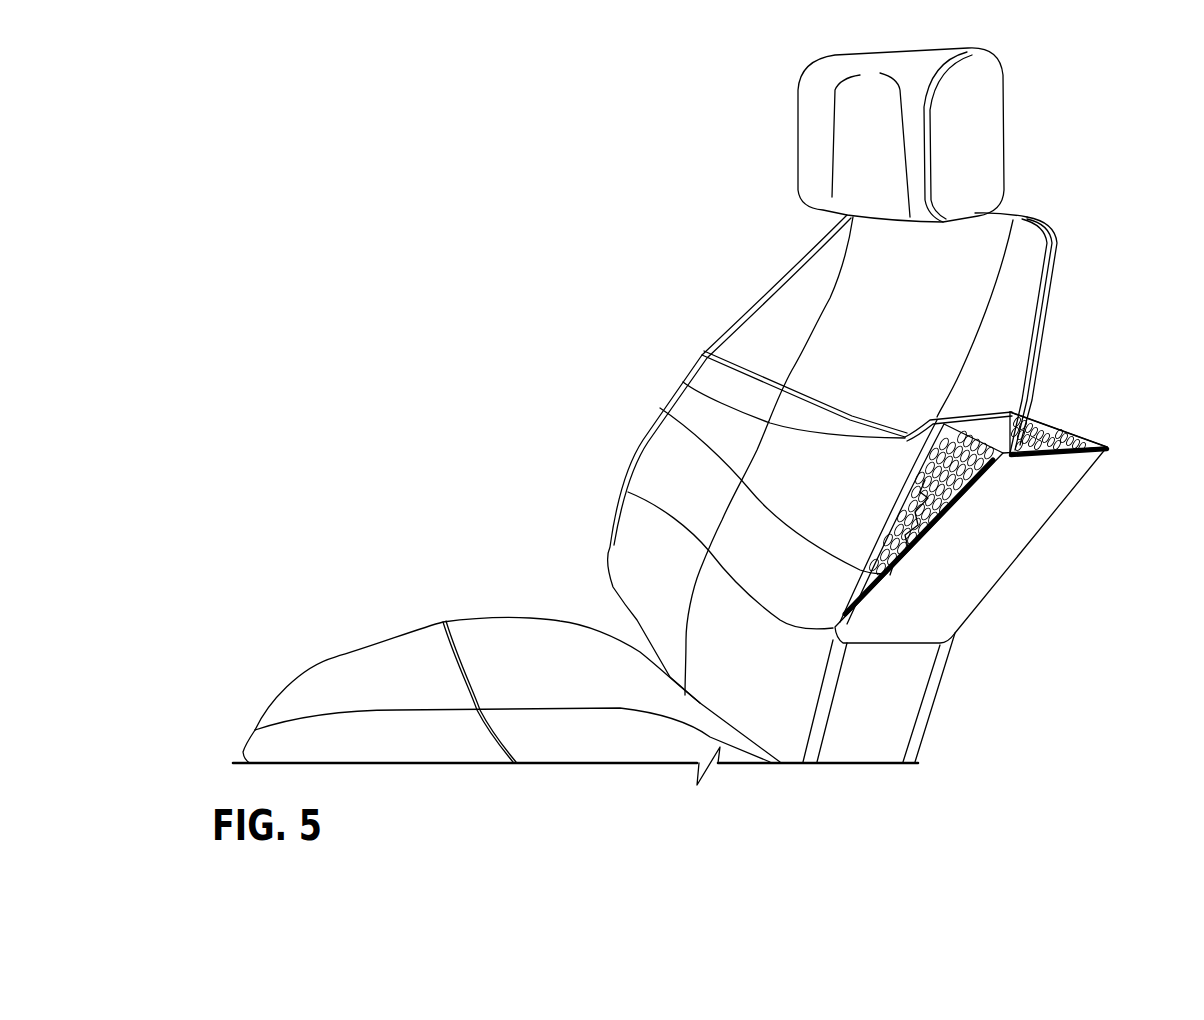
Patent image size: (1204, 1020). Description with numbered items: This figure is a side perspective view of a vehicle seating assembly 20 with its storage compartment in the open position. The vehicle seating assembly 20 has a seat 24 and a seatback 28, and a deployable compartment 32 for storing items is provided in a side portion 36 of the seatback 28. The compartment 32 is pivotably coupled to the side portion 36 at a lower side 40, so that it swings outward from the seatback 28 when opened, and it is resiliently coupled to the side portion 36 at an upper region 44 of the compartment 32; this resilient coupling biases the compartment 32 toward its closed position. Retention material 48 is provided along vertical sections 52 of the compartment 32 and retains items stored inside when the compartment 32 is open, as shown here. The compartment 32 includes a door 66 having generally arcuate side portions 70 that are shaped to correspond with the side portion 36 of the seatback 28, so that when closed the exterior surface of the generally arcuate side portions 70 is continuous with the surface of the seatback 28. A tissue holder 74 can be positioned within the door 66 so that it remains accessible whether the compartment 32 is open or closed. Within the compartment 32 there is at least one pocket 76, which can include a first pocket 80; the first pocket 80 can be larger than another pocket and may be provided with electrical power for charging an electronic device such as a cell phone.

The vehicle seating assembly 20 is at (468, 316).
The seat 24 is at (518, 645).
The seatback 28 is at (863, 297).
The compartment 32 is at (995, 545).
The side portion 36 is at (1018, 317).
The lower side 40 is at (890, 647).
The upper region 44 is at (987, 400).
The retention material 48 is at (1073, 430).
The vertical sections 52 is at (683, 382).
The door 66 is at (1072, 508).
The generally arcuate side portions 70 is at (628, 492).
The tissue holder 74 is at (660, 408).
The pocket 76 is at (1012, 420).
The first pocket 80 is at (1012, 417).